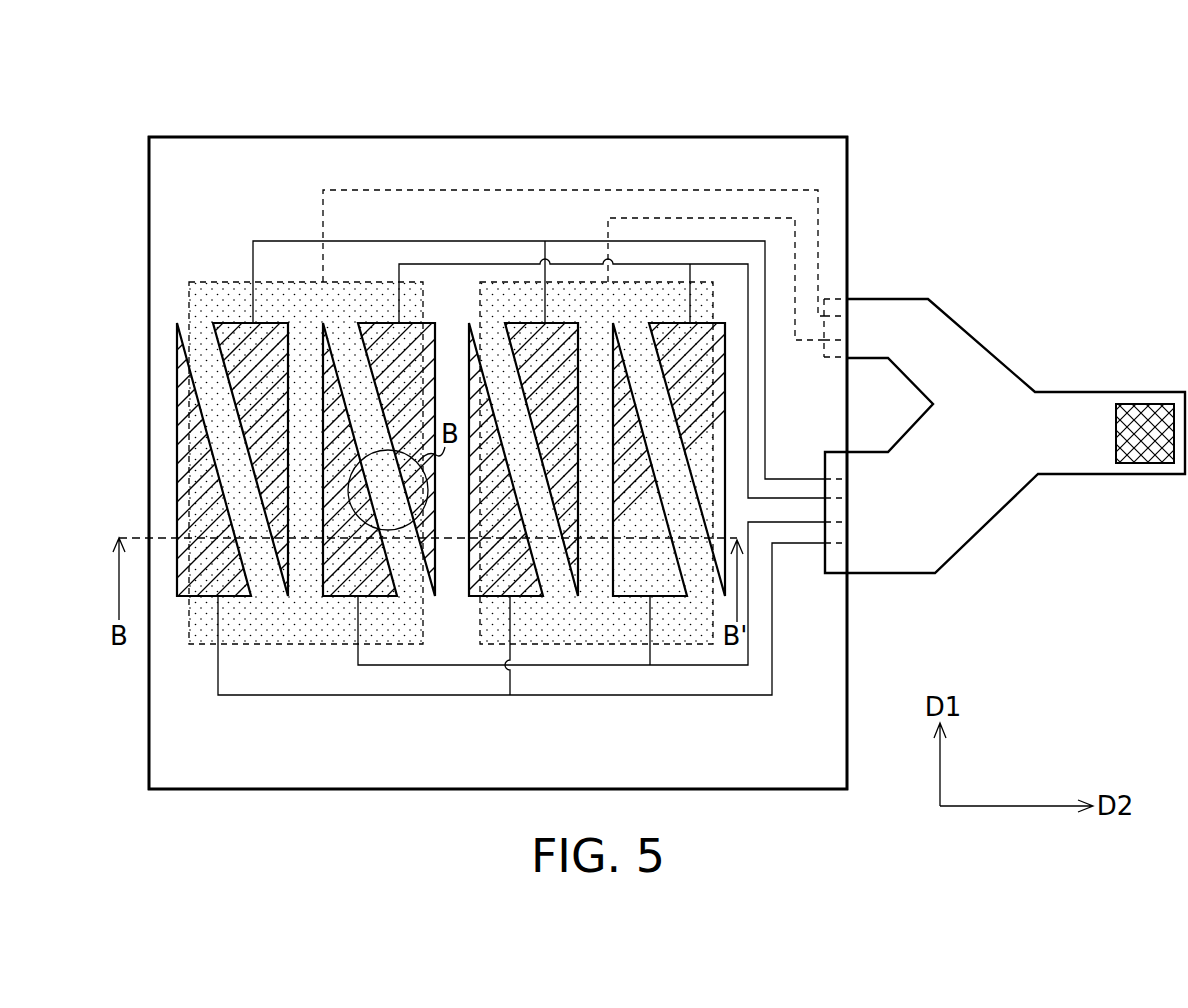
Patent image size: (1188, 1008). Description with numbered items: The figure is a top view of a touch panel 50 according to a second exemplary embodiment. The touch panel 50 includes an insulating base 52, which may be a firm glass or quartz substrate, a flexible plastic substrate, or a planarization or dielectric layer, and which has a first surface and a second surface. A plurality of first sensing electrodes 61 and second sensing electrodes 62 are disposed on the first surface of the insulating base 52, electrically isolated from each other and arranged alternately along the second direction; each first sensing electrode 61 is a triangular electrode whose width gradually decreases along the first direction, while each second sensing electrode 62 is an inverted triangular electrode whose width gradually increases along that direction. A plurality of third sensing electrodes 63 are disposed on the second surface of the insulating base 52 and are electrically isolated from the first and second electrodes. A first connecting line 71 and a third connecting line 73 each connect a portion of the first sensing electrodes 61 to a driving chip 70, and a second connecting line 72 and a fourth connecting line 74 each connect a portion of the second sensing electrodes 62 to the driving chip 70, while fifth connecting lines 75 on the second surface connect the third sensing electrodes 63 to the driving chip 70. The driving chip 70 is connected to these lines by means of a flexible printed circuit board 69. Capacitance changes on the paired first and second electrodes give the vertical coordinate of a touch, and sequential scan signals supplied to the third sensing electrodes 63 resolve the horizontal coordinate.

The touch panel 50 is at (1098, 118).
The insulating base 52 is at (847, 182).
The first sensing electrode 61 is at (407, 460).
The second sensing electrode 62 is at (407, 460).
The third sensing electrode 63 is at (451, 463).
The flexible printed circuit board 69 is at (1068, 385).
The driving chip 70 is at (1146, 404).
The first connecting line 71 is at (702, 696).
The second connecting line 72 is at (767, 415).
The third connecting line 73 is at (748, 605).
The fourth connecting line 74 is at (748, 450).
The fifth connecting line 75 is at (322, 215).